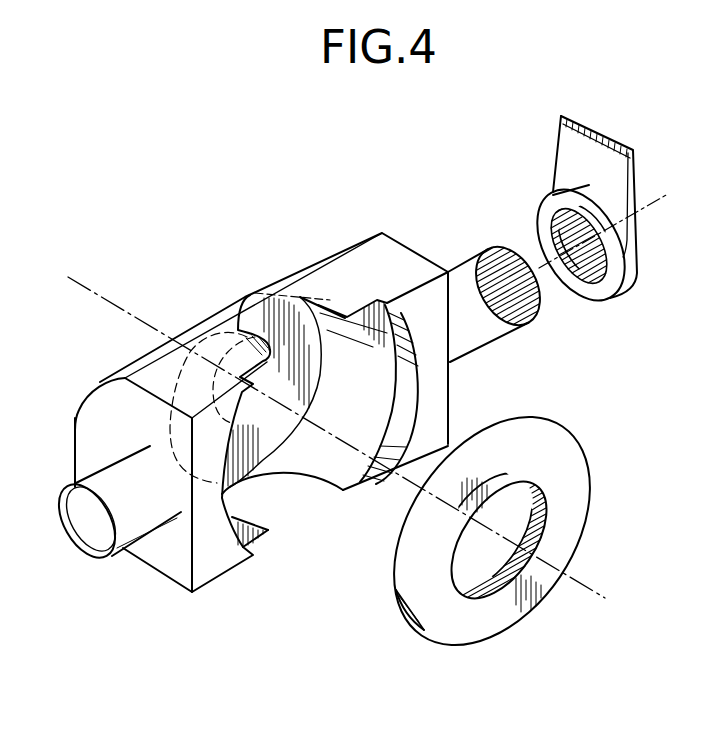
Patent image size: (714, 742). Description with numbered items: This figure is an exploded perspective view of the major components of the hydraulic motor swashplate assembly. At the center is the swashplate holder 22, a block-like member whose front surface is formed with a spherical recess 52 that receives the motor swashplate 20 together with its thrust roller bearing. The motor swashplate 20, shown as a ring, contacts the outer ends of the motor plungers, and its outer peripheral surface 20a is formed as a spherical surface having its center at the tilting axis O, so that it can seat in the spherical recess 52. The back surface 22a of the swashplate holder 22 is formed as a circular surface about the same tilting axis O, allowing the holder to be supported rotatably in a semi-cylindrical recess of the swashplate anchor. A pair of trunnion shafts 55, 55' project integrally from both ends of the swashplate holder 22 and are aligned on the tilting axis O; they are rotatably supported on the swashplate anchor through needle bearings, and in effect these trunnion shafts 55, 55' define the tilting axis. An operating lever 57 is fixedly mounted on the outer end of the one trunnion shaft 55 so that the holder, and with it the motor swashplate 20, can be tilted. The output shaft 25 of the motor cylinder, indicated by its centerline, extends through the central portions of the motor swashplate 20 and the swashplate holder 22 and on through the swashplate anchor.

The motor swashplate 20 is at (473, 640).
The outer peripheral surface 20a is at (401, 568).
The swashplate holder 22 is at (396, 252).
The back surface 22a is at (84, 403).
The output shaft 25 is at (117, 307).
The spherical recess 52 is at (370, 394).
The trunnion shaft 55 is at (558, 279).
The trunnion shaft 55' is at (114, 507).
The operating lever 57 is at (628, 172).